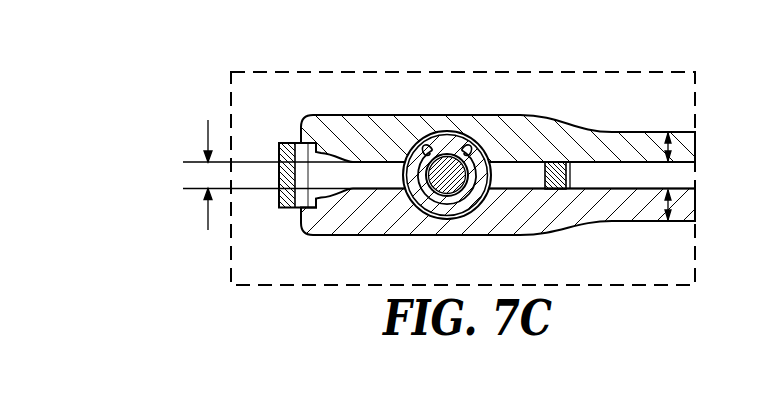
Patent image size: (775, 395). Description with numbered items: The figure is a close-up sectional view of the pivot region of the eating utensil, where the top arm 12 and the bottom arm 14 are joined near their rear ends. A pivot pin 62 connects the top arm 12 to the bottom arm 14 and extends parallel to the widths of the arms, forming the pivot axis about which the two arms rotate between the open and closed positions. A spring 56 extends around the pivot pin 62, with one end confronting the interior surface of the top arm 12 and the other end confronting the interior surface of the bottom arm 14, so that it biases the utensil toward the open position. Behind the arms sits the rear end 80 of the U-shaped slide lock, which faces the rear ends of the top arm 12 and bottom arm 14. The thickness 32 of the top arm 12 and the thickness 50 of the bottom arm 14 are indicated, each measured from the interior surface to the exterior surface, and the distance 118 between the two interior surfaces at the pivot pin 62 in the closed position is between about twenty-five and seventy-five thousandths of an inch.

The top arm 12 is at (548, 142).
The bottom arm 14 is at (585, 203).
The thickness 32 is at (672, 148).
The thickness 50 is at (672, 205).
The spring 56 is at (398, 152).
The pivot pin 62 is at (444, 168).
The rear end 80 is at (288, 142).
The distance 118 is at (208, 218).